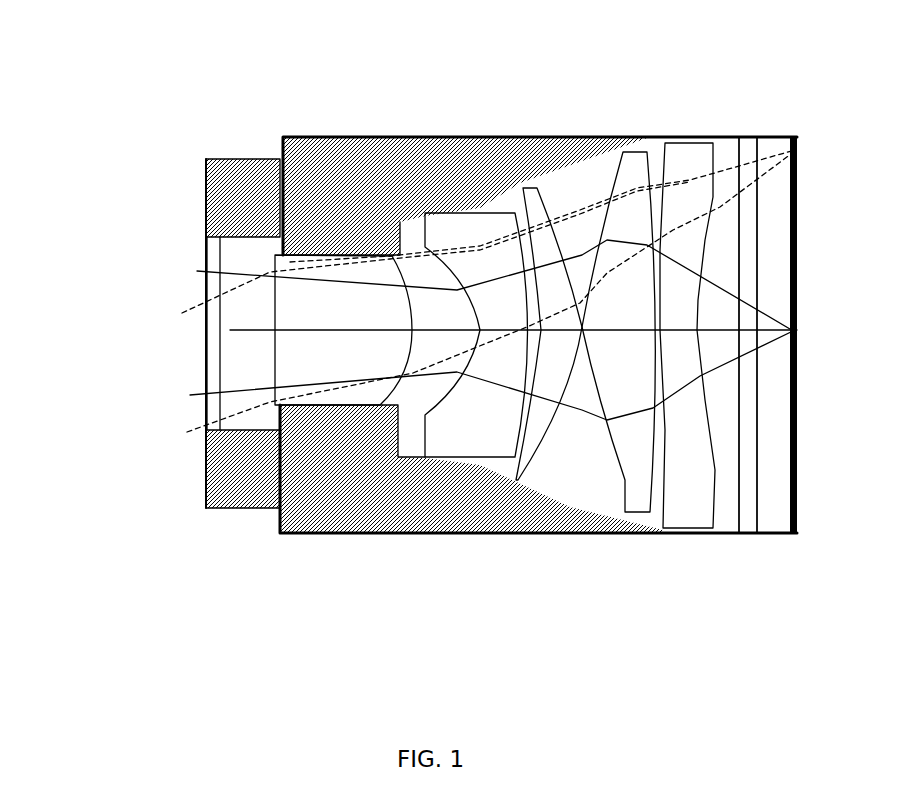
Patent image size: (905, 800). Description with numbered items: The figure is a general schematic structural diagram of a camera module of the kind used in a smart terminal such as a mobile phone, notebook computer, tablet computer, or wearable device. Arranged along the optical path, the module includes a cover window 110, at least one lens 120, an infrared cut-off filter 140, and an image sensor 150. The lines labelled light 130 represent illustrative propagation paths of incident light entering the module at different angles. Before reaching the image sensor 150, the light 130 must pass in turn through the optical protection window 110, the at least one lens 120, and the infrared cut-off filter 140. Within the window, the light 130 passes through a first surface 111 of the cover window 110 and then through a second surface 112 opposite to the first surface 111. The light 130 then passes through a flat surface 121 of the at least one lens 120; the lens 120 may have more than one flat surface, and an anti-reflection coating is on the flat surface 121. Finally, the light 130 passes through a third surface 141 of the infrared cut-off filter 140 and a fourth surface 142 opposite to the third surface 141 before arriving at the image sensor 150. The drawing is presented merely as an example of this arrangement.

The cover window 110 is at (207, 250).
The first surface 111 is at (205, 382).
The second surface 112 is at (223, 380).
The lens 120 is at (700, 492).
The flat surface 121 is at (283, 405).
The light 130 is at (187, 315).
The infrared cut-off filter 140 is at (750, 158).
The third surface 141 is at (740, 515).
The fourth surface 142 is at (758, 515).
The image sensor 150 is at (796, 137).